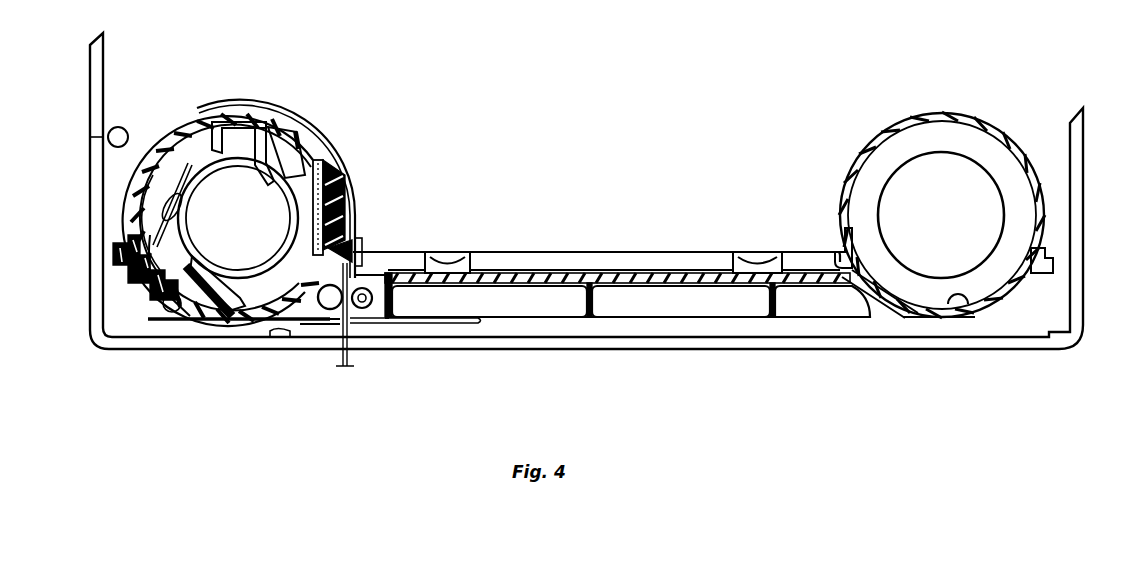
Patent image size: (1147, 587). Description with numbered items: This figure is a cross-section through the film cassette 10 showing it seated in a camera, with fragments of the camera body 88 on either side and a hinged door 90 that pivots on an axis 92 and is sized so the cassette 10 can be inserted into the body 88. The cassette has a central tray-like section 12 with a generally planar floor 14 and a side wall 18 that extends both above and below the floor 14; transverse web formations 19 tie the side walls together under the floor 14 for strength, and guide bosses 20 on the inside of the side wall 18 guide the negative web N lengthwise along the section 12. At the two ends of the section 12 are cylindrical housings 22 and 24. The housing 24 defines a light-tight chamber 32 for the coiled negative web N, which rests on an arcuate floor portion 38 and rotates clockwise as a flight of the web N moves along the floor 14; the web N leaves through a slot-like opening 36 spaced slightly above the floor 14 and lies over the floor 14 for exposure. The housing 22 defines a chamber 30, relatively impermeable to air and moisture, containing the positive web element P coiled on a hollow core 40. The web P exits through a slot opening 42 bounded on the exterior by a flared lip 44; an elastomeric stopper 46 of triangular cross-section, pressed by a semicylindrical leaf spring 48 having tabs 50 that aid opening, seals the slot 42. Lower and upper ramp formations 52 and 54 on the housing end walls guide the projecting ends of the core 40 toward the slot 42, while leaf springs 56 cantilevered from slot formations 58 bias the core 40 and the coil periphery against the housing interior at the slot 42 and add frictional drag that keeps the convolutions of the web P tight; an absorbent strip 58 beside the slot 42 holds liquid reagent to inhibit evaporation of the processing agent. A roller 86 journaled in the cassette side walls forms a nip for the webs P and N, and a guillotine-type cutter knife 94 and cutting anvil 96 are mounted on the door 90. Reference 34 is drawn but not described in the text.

The cassette 10 is at (840, 160).
The central tray-like section 12 is at (522, 253).
The floor 14 is at (648, 283).
The side wall 18 is at (628, 263).
The transverse web formations 19 is at (397, 300).
The guide bosses 20 is at (445, 253).
The housing 22 is at (160, 135).
The housing 24 is at (963, 125).
The chamber 30 is at (245, 120).
The chamber 32 is at (1040, 251).
The spool hub 34 is at (297, 290).
The slot-like opening 36 is at (835, 258).
The arcuate floor portion 38 is at (980, 303).
The hollow core 40 is at (227, 167).
The slot opening 42 is at (317, 248).
The lip 44 is at (333, 247).
The elastomeric stopper 46 is at (340, 262).
The semicylindrical leaf spring 48 is at (283, 108).
The tabs 50 is at (358, 202).
The lower ramp formation 52 is at (230, 276).
The upper ramp formation 54 is at (267, 176).
The leaf springs 56 is at (178, 210).
The slot formations / absorbent strip 58 is at (327, 175).
The roller 86 is at (372, 280).
The camera body 88 is at (100, 103).
The hinged door 90 is at (835, 341).
The axis 92 is at (121, 127).
The guillotine-type cutter knife 94 is at (452, 323).
The cutting anvil 96 is at (277, 330).
The negative web N is at (562, 262).
The positive web element P is at (170, 253).